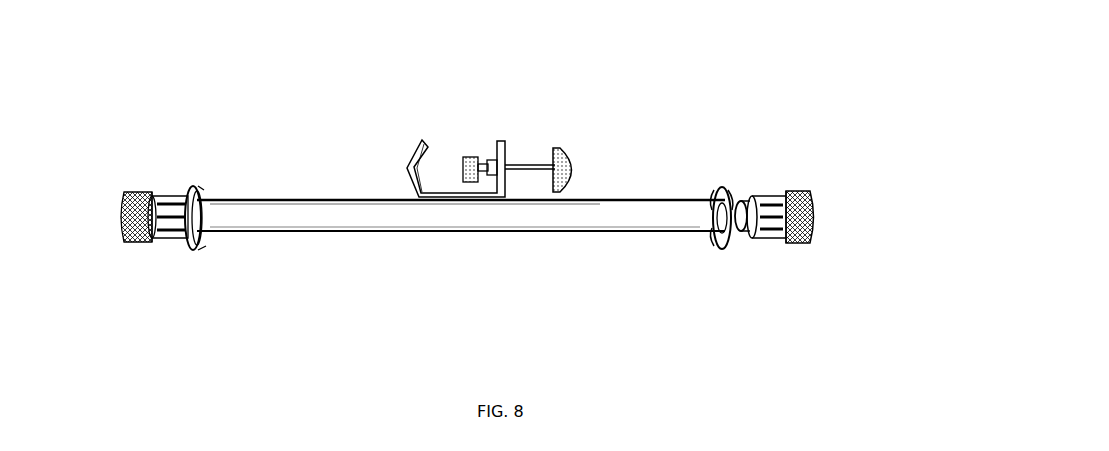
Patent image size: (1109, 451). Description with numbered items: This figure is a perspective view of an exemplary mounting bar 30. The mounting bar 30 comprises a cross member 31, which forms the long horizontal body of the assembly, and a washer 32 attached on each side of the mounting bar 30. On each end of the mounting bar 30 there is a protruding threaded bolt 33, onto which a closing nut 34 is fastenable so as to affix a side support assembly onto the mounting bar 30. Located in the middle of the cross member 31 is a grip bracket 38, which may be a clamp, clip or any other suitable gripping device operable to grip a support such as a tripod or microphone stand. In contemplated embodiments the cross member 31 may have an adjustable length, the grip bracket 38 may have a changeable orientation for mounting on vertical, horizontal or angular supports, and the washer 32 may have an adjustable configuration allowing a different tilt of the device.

The mounting bar 30 is at (667, 125).
The cross member 31 is at (417, 223).
The washer 32 is at (730, 243).
The protruding threaded bolt 33 is at (735, 240).
The closing nut 34 is at (790, 240).
The grip bracket 38 is at (453, 118).